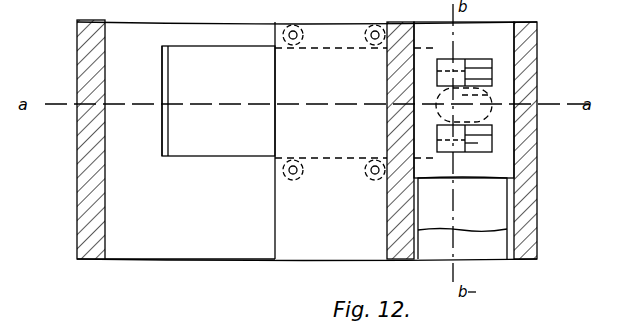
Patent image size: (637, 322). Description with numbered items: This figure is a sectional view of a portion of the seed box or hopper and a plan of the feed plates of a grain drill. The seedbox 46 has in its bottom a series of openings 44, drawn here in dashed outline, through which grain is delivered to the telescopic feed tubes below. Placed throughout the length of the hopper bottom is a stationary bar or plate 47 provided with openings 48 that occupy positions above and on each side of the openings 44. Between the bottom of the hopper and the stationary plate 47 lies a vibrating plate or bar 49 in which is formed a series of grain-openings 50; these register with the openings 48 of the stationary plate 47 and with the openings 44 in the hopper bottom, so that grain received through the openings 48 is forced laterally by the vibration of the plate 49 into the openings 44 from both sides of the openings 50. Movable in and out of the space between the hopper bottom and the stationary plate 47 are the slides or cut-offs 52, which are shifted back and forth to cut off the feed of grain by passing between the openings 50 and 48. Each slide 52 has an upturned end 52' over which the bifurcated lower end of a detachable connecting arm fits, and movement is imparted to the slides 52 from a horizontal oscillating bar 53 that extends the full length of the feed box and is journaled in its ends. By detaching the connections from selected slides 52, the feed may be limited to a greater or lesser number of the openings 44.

The openings 44 is at (492, 95).
The seedbox 46 is at (513, 203).
The stationary bar or plate 47 is at (464, 100).
The openings 48 is at (492, 66).
The vibrating plate or bar 49 is at (462, 218).
The grain-openings 50 is at (478, 79).
The slides or cut-offs 52 is at (331, 103).
The upturned end 52' is at (142, 101).
The horizontal oscillating bar 53 is at (190, 288).